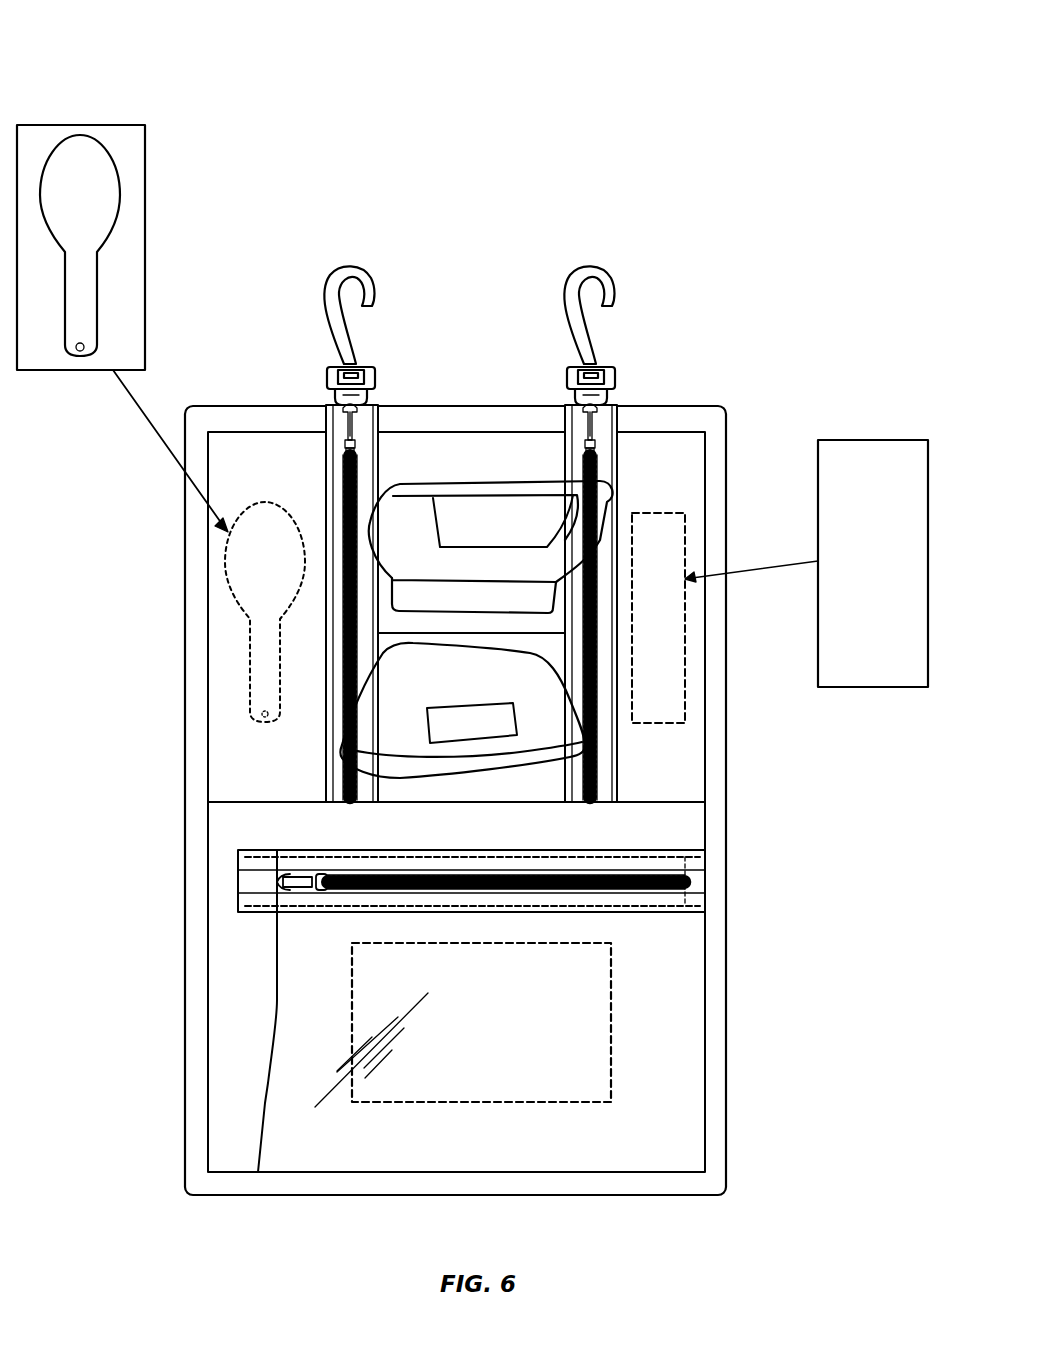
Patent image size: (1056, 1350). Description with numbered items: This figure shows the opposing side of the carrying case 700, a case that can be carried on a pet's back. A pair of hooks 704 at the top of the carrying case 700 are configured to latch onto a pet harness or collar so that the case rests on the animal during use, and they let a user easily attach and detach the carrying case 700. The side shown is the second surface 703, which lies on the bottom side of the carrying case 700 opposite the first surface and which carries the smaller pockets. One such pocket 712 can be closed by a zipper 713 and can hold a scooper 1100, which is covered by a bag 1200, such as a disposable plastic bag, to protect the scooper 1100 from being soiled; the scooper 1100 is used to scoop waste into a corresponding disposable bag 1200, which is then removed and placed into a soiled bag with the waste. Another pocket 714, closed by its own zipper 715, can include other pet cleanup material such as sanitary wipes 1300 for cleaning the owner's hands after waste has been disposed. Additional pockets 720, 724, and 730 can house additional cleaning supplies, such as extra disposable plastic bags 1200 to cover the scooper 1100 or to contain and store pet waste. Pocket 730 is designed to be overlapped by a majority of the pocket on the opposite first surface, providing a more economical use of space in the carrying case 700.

The carrying case 700 is at (149, 62).
The second surface 703 is at (240, 757).
The hooks 704 is at (352, 265).
The pocket 712 is at (240, 470).
The zipper 713 is at (357, 488).
The pocket 714 is at (685, 480).
The zipper 715 is at (597, 470).
The pocket 720 is at (532, 683).
The pocket 724 is at (555, 538).
The pocket 730 is at (653, 1108).
The scooper 1100 is at (110, 195).
The bag 1200 is at (132, 315).
The sanitary wipes 1300 is at (893, 448).